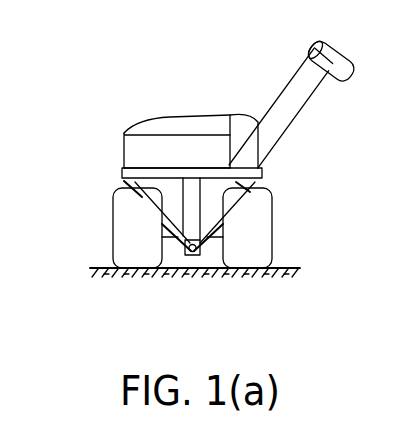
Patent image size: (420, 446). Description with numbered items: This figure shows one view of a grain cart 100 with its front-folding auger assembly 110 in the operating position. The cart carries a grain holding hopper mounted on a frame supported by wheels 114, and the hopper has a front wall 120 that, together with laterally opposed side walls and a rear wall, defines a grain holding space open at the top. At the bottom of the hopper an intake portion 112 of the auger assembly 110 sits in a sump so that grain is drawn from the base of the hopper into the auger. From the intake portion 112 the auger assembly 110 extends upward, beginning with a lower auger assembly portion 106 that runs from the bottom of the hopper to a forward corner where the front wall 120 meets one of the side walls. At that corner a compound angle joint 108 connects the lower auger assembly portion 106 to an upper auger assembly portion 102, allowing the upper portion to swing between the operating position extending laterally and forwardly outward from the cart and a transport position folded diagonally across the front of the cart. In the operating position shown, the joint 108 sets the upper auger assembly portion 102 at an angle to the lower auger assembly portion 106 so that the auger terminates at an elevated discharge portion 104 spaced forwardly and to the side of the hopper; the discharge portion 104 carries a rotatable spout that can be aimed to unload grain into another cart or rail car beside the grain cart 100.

The grain cart 100 is at (162, 98).
The upper auger assembly portion 102 is at (283, 113).
The discharge portion 104 is at (346, 48).
The lower auger assembly portion 106 is at (243, 160).
The compound angle joint 108 is at (243, 120).
The auger assembly 110 is at (301, 191).
The intake portion 112 is at (195, 273).
The wheels 114 is at (127, 237).
The front wall 120 is at (138, 155).